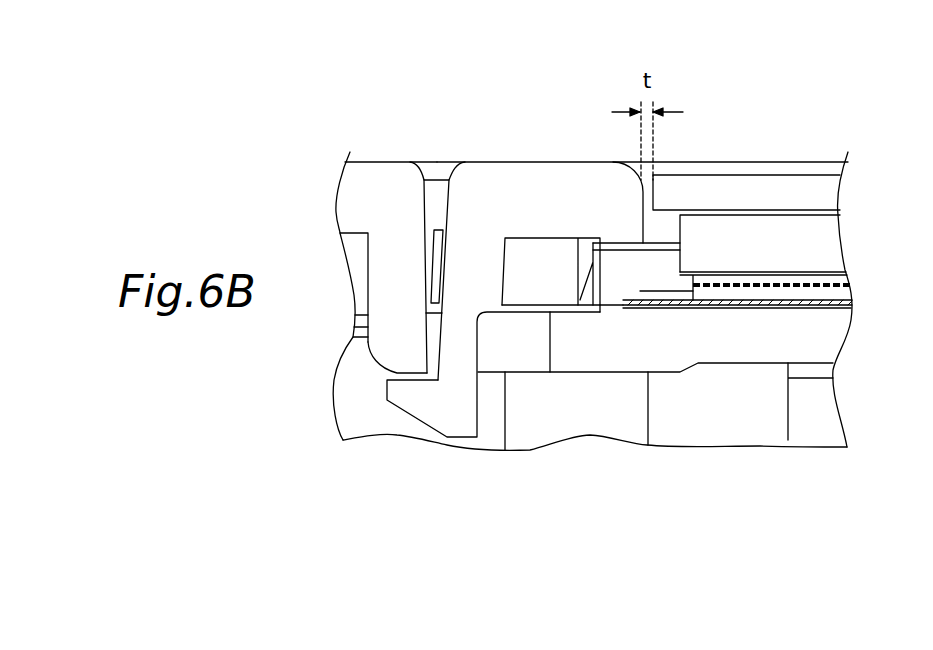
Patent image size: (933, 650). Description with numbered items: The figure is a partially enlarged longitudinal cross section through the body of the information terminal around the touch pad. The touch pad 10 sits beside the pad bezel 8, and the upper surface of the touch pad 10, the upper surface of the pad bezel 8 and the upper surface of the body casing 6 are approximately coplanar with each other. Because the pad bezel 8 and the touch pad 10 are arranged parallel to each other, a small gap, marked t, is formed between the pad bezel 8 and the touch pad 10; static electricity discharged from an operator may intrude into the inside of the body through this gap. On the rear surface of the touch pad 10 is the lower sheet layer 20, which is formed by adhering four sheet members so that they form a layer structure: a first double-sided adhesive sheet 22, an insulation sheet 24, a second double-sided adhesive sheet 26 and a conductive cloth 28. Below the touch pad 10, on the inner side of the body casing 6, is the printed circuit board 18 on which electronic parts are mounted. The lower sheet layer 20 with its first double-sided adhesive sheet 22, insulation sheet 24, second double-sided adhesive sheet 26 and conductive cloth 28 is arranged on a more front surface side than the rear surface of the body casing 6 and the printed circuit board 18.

The body casing 6 is at (387, 165).
The pad bezel 8 is at (583, 167).
The touch pad 10 is at (855, 177).
The printed circuit board 18 is at (822, 407).
The lower sheet layer 20 is at (855, 277).
The first double-sided adhesive sheet 22 is at (823, 277).
The insulation sheet 24 is at (783, 284).
The second double-sided adhesive sheet 26 is at (818, 298).
The conductive cloth 28 is at (767, 304).